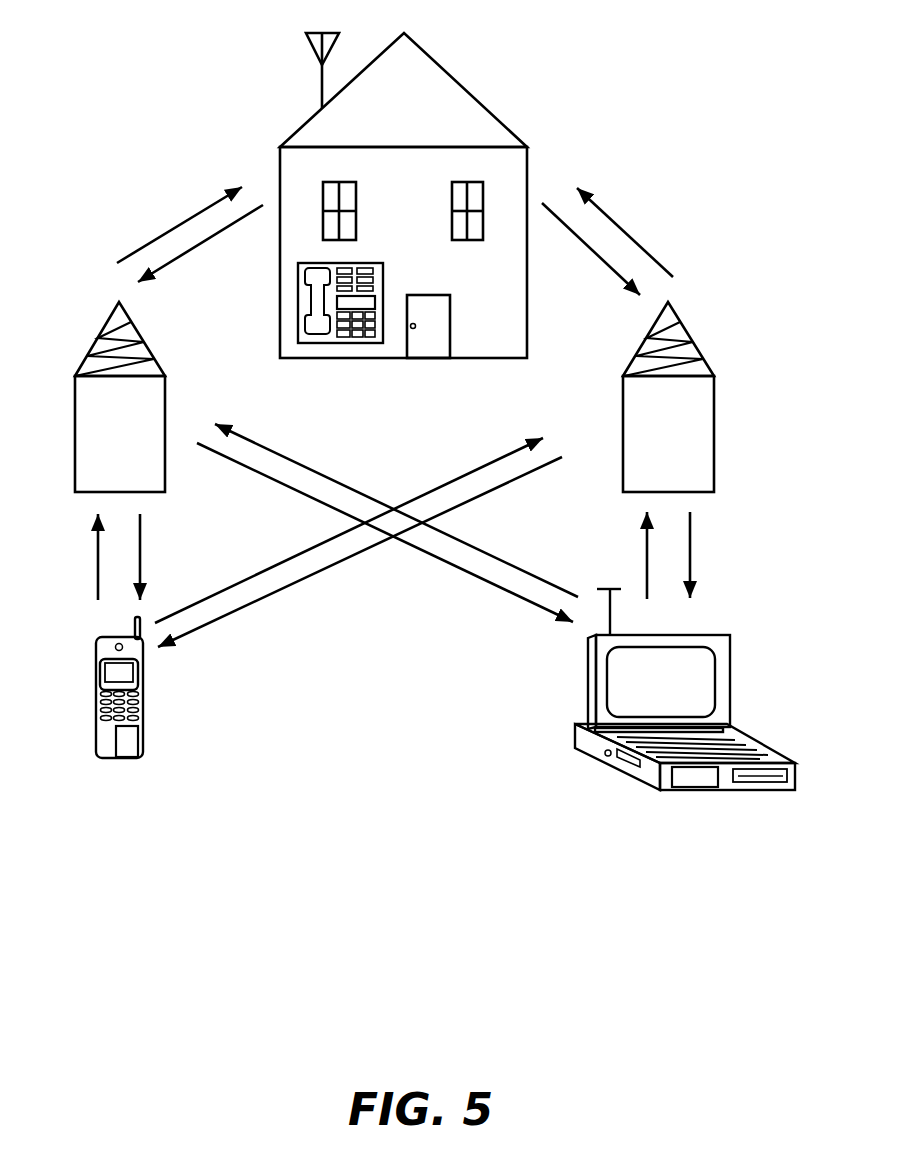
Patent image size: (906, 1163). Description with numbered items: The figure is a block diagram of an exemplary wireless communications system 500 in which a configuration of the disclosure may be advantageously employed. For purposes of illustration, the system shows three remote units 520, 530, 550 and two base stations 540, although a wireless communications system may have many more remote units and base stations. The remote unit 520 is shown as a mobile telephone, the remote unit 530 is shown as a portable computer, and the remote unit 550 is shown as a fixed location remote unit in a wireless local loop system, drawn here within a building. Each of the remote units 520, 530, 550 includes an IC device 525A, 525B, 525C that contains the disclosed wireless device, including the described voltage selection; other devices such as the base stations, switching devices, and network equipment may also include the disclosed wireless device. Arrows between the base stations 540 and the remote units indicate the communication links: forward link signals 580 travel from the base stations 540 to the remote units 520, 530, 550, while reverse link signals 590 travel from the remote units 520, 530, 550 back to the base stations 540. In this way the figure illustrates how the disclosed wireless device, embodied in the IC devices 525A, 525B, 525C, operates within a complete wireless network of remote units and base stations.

The wireless communications system 500 is at (285, 184).
The remote unit 520 is at (98, 648).
The IC device 525A is at (100, 764).
The IC device 525B is at (356, 348).
The IC device 525C is at (686, 802).
The remote unit 530 is at (710, 634).
The base station 540 is at (100, 335).
The remote unit 550 is at (298, 312).
The forward link signal 580 is at (183, 220).
The reverse link signal 590 is at (187, 255).